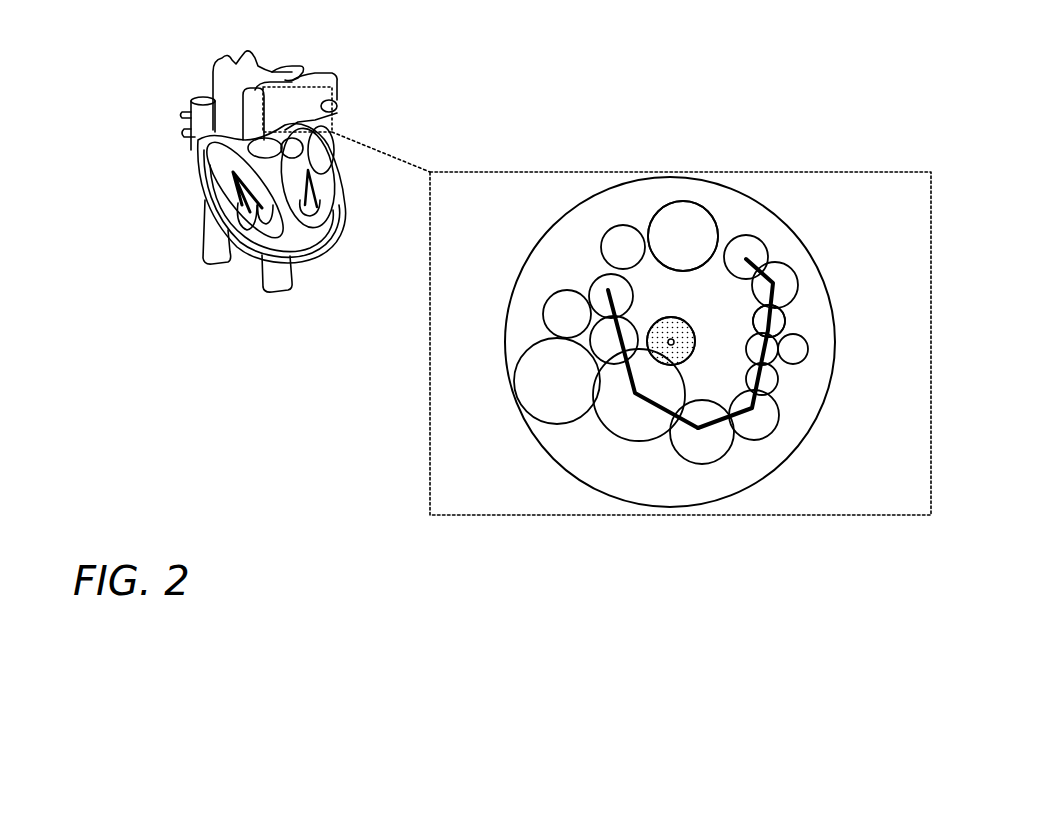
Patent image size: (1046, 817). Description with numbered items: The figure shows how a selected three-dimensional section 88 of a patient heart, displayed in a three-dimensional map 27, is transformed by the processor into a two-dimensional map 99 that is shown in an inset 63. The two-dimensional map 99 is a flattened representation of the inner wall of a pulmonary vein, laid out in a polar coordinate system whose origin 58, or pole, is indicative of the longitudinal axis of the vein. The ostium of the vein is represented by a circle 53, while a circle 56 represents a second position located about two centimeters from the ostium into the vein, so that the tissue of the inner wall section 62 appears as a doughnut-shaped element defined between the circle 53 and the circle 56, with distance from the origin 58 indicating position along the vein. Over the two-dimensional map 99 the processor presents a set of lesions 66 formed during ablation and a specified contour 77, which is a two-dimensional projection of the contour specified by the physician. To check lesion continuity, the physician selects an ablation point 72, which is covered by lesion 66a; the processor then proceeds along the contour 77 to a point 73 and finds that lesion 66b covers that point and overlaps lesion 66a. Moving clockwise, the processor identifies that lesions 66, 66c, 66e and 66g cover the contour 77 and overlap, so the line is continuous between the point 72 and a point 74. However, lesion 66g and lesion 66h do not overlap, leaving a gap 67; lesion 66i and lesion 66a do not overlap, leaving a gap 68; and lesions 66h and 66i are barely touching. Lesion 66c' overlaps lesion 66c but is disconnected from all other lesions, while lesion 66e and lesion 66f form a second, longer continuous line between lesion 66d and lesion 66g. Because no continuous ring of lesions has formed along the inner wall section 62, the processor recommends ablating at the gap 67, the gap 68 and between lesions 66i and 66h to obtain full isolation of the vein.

The 3D map 27 is at (173, 273).
The 3D section 88 is at (331, 86).
The inset 63 is at (430, 470).
The 2D map 99 is at (480, 498).
The inner wall section 62 is at (572, 443).
The lesion 66h is at (621, 224).
The gap 68 is at (683, 201).
The lesion 66i is at (677, 201).
The lesion 66a is at (746, 235).
The lesion 66b is at (792, 264).
The point 73 is at (788, 278).
The circle 53 is at (790, 313).
The lesion 66c is at (727, 320).
The lesions 66 is at (808, 348).
The lesion 66c' is at (821, 376).
The lesion 66g is at (588, 283).
The lesion 66f is at (543, 316).
The gap 67 is at (604, 305).
The lesion 66e is at (528, 377).
The lesion 66d is at (642, 441).
The circle 56 is at (695, 342).
The origin 58 is at (688, 362).
The contour 77 is at (673, 345).
The point 74 is at (606, 289).
The ablation point 72 is at (758, 250).